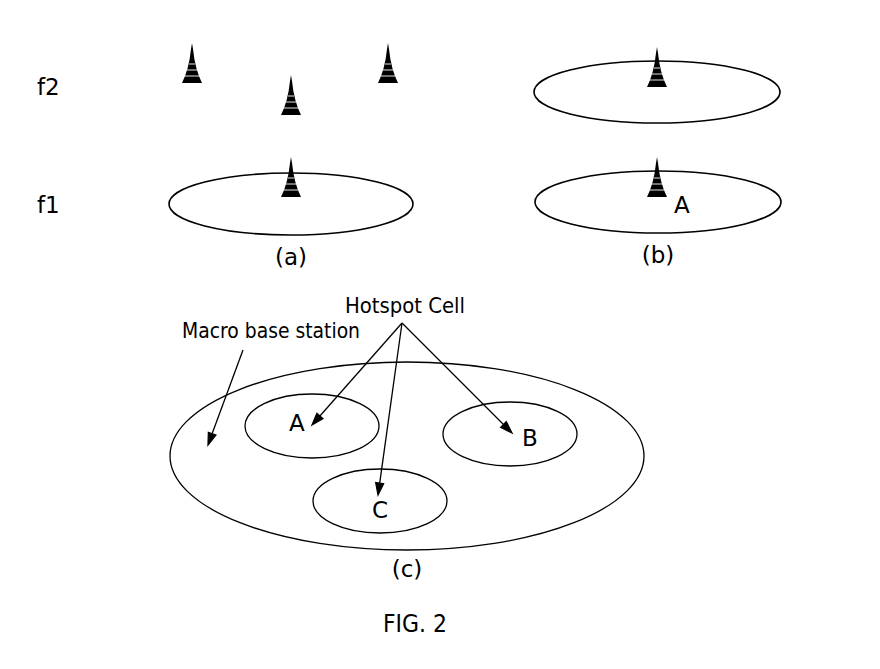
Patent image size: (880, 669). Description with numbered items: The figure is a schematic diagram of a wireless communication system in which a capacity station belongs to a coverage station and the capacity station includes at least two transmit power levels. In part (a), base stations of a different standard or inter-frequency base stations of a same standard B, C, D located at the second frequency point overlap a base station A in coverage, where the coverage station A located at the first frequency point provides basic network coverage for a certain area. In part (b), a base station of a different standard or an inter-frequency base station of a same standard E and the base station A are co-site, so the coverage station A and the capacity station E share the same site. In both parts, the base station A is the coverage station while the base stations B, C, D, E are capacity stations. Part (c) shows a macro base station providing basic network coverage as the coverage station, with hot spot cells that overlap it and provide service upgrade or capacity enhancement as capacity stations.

The coverage station A is at (291, 196).
The capacity station B is at (291, 111).
The capacity station C is at (388, 80).
The capacity station D is at (192, 80).
The capacity station E is at (657, 85).